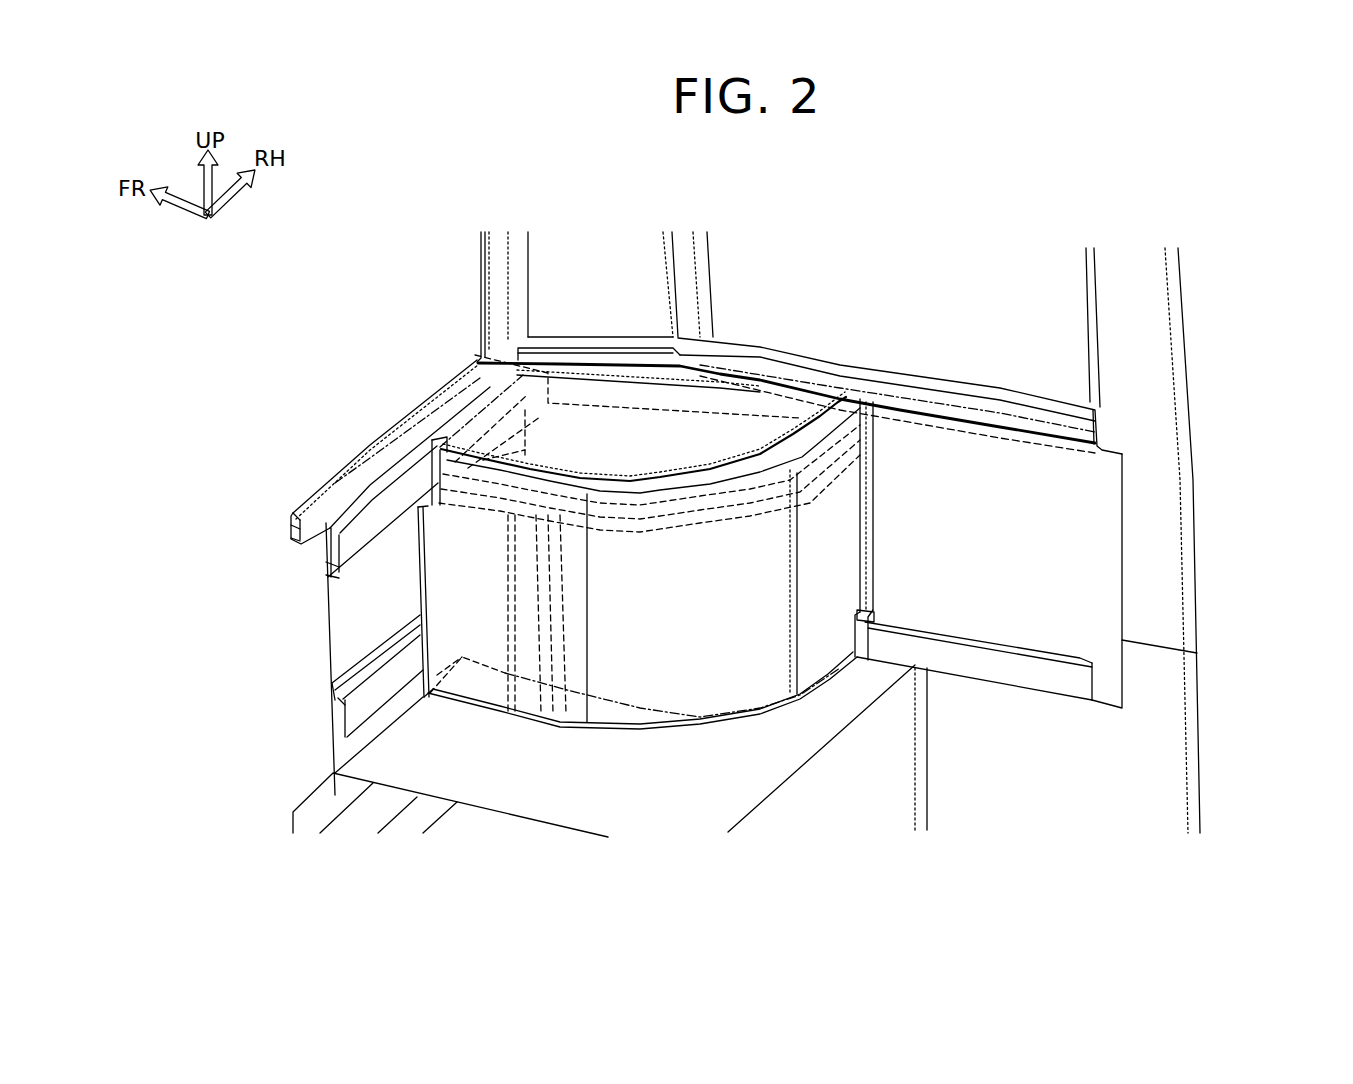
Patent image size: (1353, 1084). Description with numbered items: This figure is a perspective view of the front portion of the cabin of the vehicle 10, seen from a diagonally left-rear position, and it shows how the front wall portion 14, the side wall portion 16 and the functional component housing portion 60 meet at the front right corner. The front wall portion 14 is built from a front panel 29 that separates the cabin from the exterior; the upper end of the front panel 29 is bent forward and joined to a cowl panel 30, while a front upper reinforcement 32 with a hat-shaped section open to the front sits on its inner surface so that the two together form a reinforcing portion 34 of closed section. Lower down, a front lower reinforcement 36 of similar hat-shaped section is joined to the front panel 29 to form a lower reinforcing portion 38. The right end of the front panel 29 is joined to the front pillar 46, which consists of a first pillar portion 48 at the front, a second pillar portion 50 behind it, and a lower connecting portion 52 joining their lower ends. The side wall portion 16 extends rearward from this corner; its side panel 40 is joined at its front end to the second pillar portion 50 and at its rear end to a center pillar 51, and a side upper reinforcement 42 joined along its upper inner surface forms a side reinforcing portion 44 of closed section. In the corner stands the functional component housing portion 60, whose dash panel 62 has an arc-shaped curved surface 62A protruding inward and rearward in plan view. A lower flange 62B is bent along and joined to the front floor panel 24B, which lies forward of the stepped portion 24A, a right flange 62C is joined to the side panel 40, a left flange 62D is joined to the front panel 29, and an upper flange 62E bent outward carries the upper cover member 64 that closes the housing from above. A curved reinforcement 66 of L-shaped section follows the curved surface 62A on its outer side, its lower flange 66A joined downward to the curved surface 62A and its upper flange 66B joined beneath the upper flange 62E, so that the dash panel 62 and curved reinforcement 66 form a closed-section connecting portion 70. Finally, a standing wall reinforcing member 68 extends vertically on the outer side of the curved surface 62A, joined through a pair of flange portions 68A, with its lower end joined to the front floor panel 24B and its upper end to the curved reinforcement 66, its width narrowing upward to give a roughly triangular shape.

The vehicle 10 is at (325, 292).
The front wall portion 14 is at (330, 668).
The side wall portion 16 is at (982, 373).
The stepped portion 24A is at (795, 805).
The front floor panel 24B is at (507, 783).
The front panel 29 is at (330, 620).
The cowl panel 30 is at (291, 526).
The front upper reinforcement 32 is at (357, 517).
The reinforcing portion 34 is at (410, 457).
The front lower reinforcement 36 is at (340, 712).
The lower reinforcing portion 38 is at (341, 701).
The side panel 40 is at (1070, 548).
The side upper reinforcement 42 is at (852, 362).
The side reinforcing portion 44 is at (1093, 427).
The front pillar 46 is at (483, 261).
The first pillar portion 48 is at (528, 257).
The second pillar portion 50 is at (712, 262).
The center pillar 51 is at (1190, 336).
The lower connecting portion 52 is at (578, 338).
The functional component housing portion 60 is at (833, 700).
The dash panel 62 is at (672, 728).
The curved surface 62A is at (745, 678).
The lower flange 62B is at (837, 677).
The right flange 62C is at (873, 463).
The left flange 62D is at (424, 697).
The upper flange 62E is at (806, 424).
The upper cover member 64 is at (768, 380).
The curved reinforcement 66 is at (828, 480).
The lower flange 66A is at (717, 520).
The upper flange 66B is at (650, 470).
The standing wall reinforcing member 68 is at (503, 686).
The flange portions 68A is at (557, 722).
The connecting portion 70 is at (470, 466).